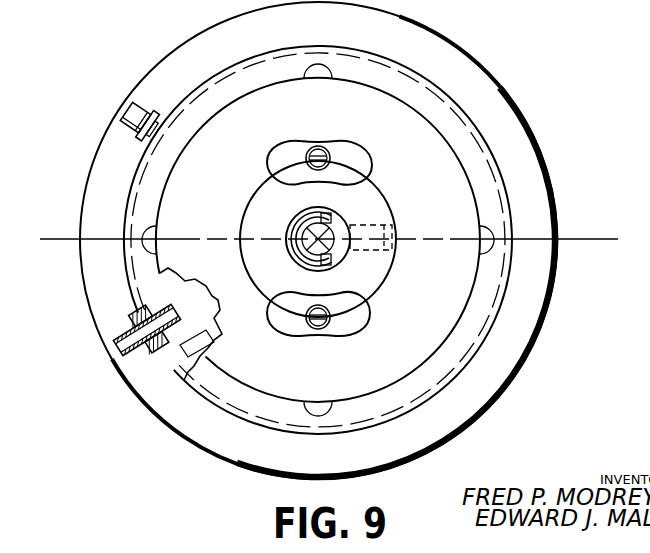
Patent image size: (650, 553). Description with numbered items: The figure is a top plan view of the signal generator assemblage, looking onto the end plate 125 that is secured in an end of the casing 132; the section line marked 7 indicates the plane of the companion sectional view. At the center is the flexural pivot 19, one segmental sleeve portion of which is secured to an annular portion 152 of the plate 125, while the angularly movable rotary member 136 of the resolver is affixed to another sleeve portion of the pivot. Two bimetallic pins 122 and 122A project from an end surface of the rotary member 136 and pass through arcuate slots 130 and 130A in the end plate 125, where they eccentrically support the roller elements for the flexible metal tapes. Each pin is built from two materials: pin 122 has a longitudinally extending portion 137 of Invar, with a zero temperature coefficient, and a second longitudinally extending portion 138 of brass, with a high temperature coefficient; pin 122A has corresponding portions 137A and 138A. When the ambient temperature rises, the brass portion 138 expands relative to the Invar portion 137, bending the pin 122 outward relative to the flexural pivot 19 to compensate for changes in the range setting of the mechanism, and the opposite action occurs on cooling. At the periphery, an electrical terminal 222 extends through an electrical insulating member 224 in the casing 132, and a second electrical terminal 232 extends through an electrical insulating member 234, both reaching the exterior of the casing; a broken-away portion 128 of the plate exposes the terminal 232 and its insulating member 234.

The section line 7- 7 is at (51, 214).
The flexural pivot 19 is at (350, 208).
The pin 122 is at (322, 151).
The pin 122A is at (334, 325).
The end plate 125 is at (450, 153).
The plate portion (broken away) 128 is at (216, 328).
The arcuate slot 130 is at (324, 155).
The arcuate slot 130A is at (369, 328).
The casing 132 is at (508, 180).
The rotary member 136 is at (290, 150).
The longitudinally extending portion 137 is at (316, 147).
The longitudinally extending portion 137A is at (316, 328).
The second longitudinally extending portion 138 is at (312, 170).
The second longitudinally extending portion 138A is at (320, 308).
The annular portion 152 is at (397, 263).
The electrical terminal 222 is at (127, 116).
The electrical insulating member 224 is at (158, 108).
The electrical terminal 232 is at (122, 355).
The electrical insulating member 234 is at (137, 320).